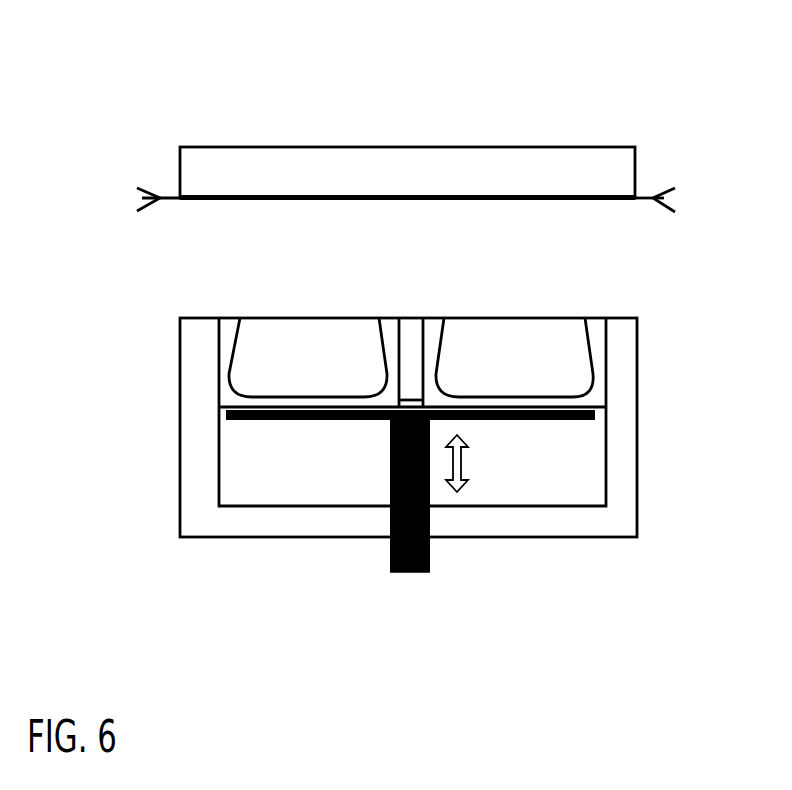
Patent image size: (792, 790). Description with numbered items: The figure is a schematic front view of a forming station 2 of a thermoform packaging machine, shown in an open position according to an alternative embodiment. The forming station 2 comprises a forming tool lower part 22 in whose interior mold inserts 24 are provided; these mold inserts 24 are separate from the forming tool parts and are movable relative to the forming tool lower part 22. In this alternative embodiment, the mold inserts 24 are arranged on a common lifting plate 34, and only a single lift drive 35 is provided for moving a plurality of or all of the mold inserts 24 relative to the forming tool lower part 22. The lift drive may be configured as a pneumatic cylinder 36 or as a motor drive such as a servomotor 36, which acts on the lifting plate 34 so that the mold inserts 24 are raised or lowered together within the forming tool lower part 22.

The forming station 2 is at (731, 88).
The forming tool lower part 22 is at (623, 522).
The mold insert 24 is at (593, 398).
The lifting plate 34 is at (577, 422).
The lift drive 35 is at (422, 580).
The pneumatic cylinder or servomotor 36 is at (432, 557).